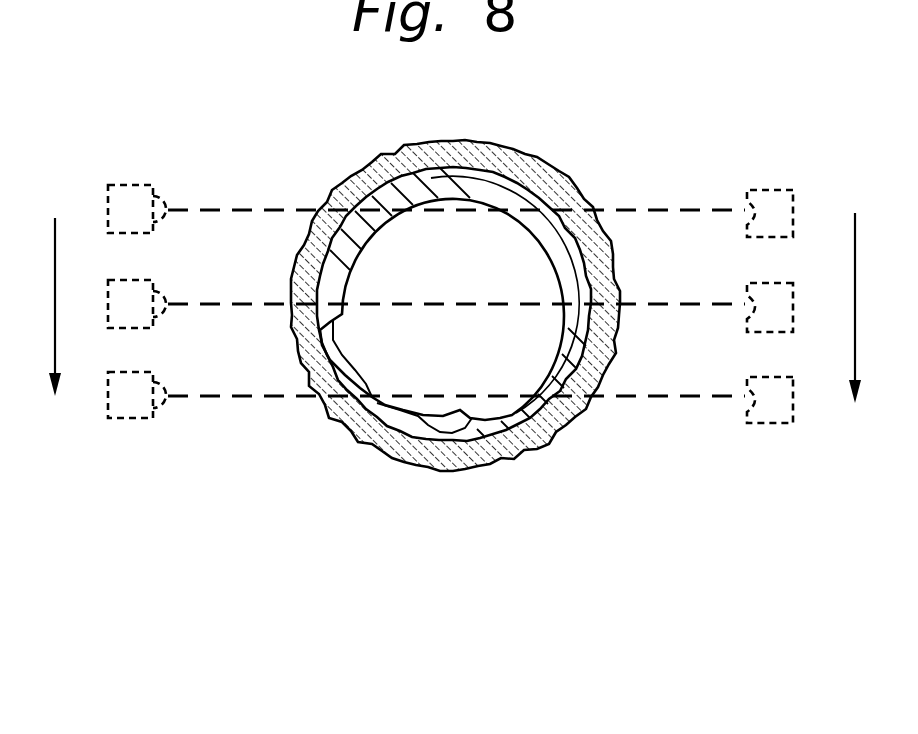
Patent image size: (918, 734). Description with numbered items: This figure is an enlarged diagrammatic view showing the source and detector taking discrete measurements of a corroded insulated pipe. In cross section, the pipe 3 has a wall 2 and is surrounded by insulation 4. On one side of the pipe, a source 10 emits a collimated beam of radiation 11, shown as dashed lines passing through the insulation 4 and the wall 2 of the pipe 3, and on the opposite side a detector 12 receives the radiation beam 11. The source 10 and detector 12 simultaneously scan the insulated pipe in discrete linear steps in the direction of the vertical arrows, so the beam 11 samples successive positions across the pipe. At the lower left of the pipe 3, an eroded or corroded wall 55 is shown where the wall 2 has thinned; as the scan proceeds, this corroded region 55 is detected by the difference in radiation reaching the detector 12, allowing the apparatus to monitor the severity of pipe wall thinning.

The wall 2 is at (533, 162).
The pipe 3 is at (556, 192).
The insulation 4 is at (475, 140).
The source 10 is at (120, 185).
The collimated beam of radiation 11 is at (210, 211).
The detector 12 is at (770, 190).
The eroded or corroded wall 55 is at (365, 376).